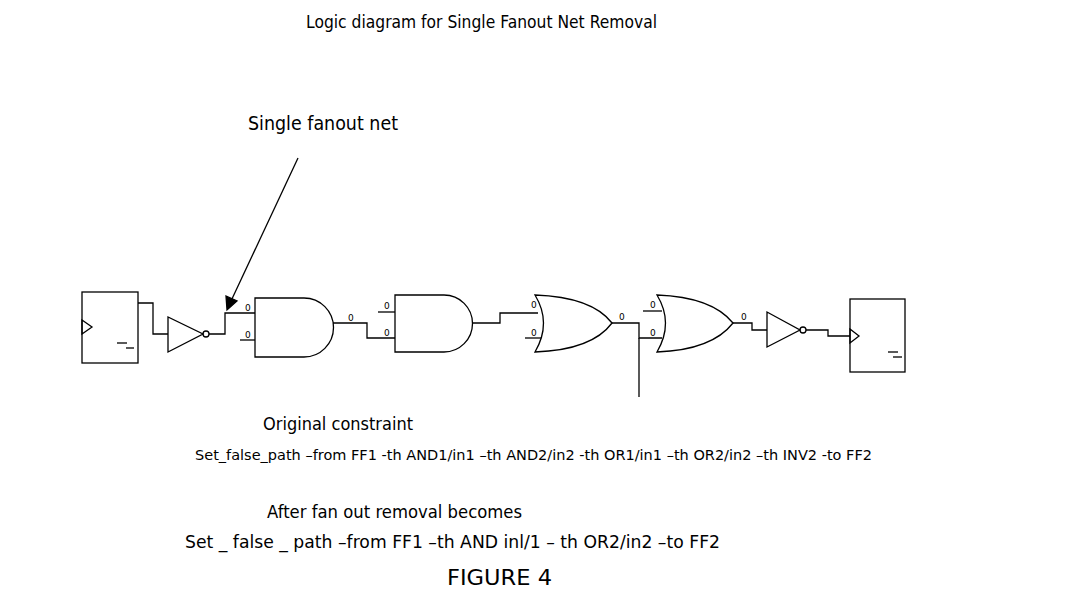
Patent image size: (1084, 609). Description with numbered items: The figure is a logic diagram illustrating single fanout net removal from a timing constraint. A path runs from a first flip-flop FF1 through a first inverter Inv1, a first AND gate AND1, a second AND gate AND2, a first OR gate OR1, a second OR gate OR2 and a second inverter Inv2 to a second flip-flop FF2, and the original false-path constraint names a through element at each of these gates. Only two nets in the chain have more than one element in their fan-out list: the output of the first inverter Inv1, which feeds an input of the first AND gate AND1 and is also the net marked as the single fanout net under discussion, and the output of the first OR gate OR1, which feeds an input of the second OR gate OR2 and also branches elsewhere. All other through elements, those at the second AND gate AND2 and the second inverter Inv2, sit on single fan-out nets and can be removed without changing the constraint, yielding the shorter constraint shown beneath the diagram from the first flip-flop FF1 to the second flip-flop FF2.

The first flip-flop FF1 is at (110, 327).
The first inverter Inv1 is at (188, 341).
The first AND gate AND1 is at (294, 327).
The second AND gate AND2 is at (434, 323).
The first OR gate OR1 is at (573, 323).
The second OR gate OR2 is at (695, 323).
The second inverter Inv2 is at (786, 336).
The second flip-flop FF2 is at (877, 335).